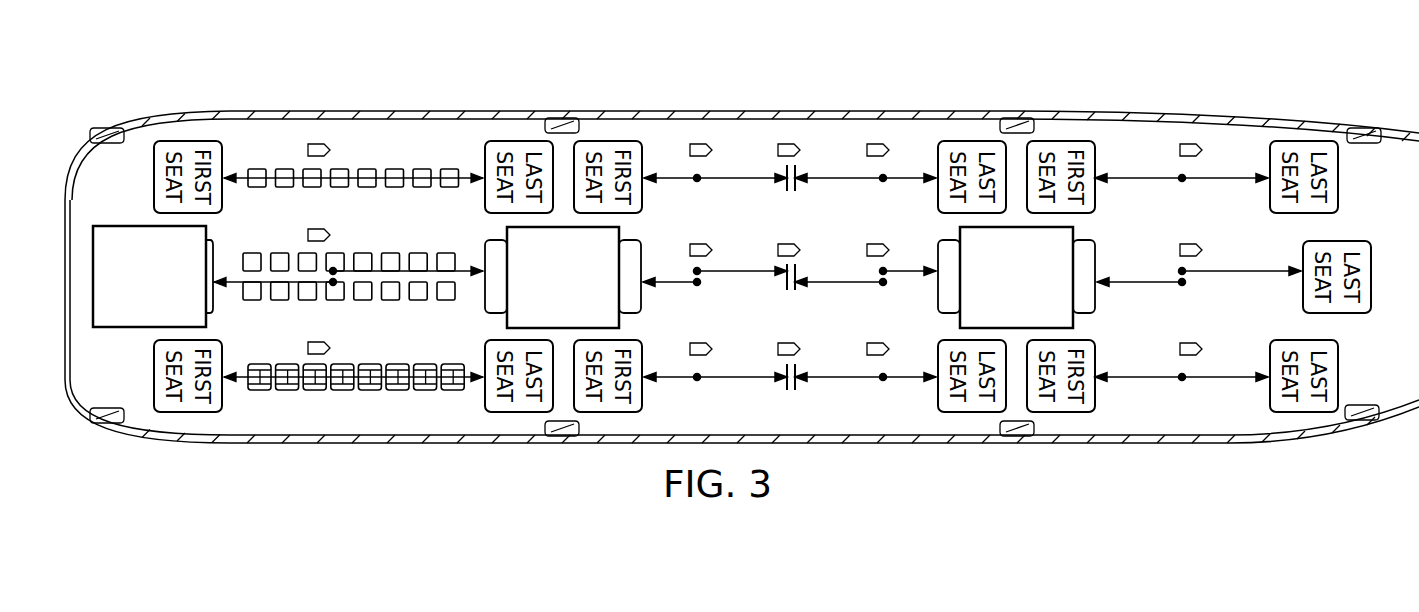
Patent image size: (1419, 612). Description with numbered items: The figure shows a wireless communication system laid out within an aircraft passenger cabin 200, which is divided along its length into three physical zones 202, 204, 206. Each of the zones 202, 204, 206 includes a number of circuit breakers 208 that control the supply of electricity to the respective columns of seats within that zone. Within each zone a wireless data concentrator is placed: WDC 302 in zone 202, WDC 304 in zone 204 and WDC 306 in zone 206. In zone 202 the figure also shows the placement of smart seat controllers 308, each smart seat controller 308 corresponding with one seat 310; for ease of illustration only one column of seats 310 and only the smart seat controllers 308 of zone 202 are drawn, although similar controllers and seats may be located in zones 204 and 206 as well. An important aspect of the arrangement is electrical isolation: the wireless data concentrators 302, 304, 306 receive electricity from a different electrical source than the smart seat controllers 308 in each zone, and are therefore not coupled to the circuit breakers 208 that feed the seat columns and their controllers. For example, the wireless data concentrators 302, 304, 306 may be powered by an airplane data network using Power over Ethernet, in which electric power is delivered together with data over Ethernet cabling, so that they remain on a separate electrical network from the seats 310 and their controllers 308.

The passenger cabin 200 is at (876, 52).
The zone 202 is at (145, 101).
The zone 204 is at (575, 101).
The zone 206 is at (1030, 101).
The circuit breaker 208 is at (334, 148).
The wireless data concentrator 302 is at (128, 304).
The wireless data concentrator 304 is at (541, 305).
The wireless data concentrator 306 is at (994, 305).
The smart seat controller 308 is at (438, 215).
The seat 310 is at (252, 391).